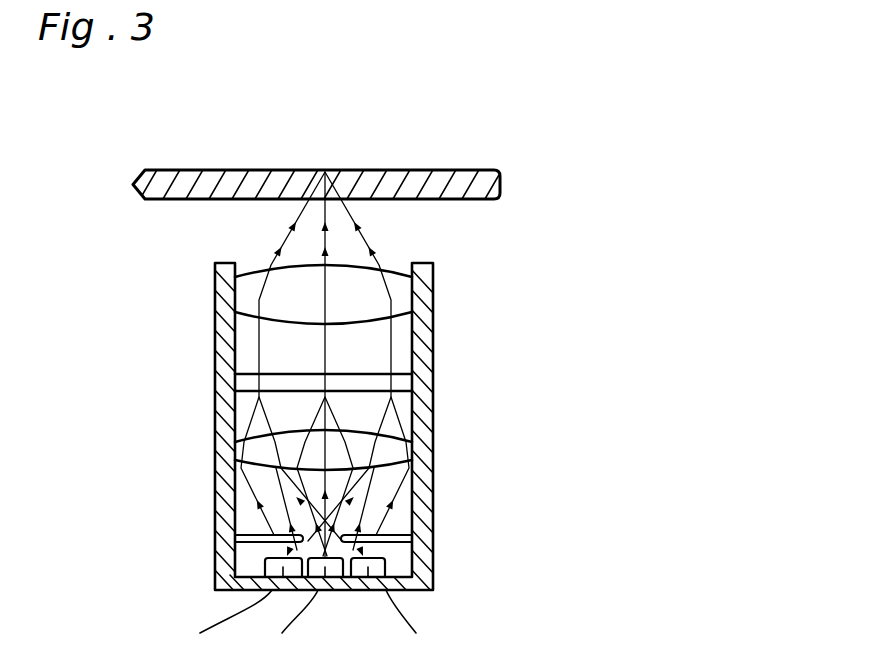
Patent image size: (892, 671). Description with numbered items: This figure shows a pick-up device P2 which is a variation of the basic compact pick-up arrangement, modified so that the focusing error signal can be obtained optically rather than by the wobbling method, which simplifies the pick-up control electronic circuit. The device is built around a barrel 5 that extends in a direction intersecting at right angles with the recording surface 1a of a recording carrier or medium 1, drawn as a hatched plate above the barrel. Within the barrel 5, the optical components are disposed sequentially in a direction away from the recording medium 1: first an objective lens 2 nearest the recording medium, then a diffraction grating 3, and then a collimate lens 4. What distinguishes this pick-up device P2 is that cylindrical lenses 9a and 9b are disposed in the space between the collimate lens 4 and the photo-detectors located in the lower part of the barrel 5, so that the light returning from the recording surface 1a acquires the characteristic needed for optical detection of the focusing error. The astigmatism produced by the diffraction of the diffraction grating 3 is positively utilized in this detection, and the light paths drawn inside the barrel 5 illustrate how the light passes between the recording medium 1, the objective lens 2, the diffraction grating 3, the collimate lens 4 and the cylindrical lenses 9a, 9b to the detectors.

The recording medium 1 is at (500, 185).
The recording surface 1a is at (445, 170).
The objective lens 2 is at (403, 292).
The diffraction grating 3 is at (402, 383).
The collimate lens 4 is at (413, 448).
The barrel 5 is at (433, 532).
The cylindrical lens 9a is at (400, 547).
The cylindrical lens 9b is at (249, 534).
The pick-up device P2 is at (646, 271).